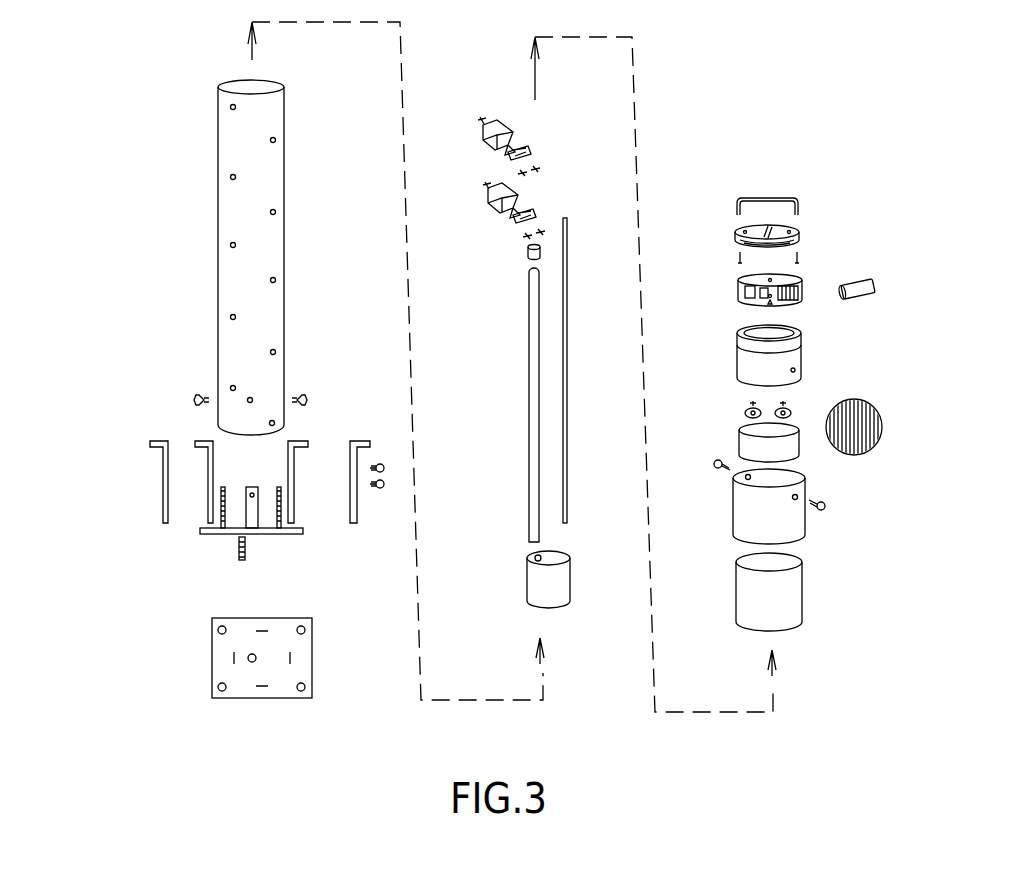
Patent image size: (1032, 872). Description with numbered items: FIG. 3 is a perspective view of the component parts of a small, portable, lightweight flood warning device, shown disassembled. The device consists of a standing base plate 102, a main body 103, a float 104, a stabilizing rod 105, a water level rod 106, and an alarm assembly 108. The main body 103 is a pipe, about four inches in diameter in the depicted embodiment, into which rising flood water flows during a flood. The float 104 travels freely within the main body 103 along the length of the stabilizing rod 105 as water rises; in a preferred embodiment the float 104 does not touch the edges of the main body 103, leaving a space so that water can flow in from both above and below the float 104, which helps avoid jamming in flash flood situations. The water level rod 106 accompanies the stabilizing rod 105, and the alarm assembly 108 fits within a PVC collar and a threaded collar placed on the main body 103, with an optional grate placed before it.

The standing base plate 102 is at (210, 655).
The main body 103 is at (210, 184).
The float 104 is at (520, 580).
The stabilizing rod 105 is at (518, 383).
The water level rod 106 is at (572, 300).
The alarm assembly 108 is at (802, 298).